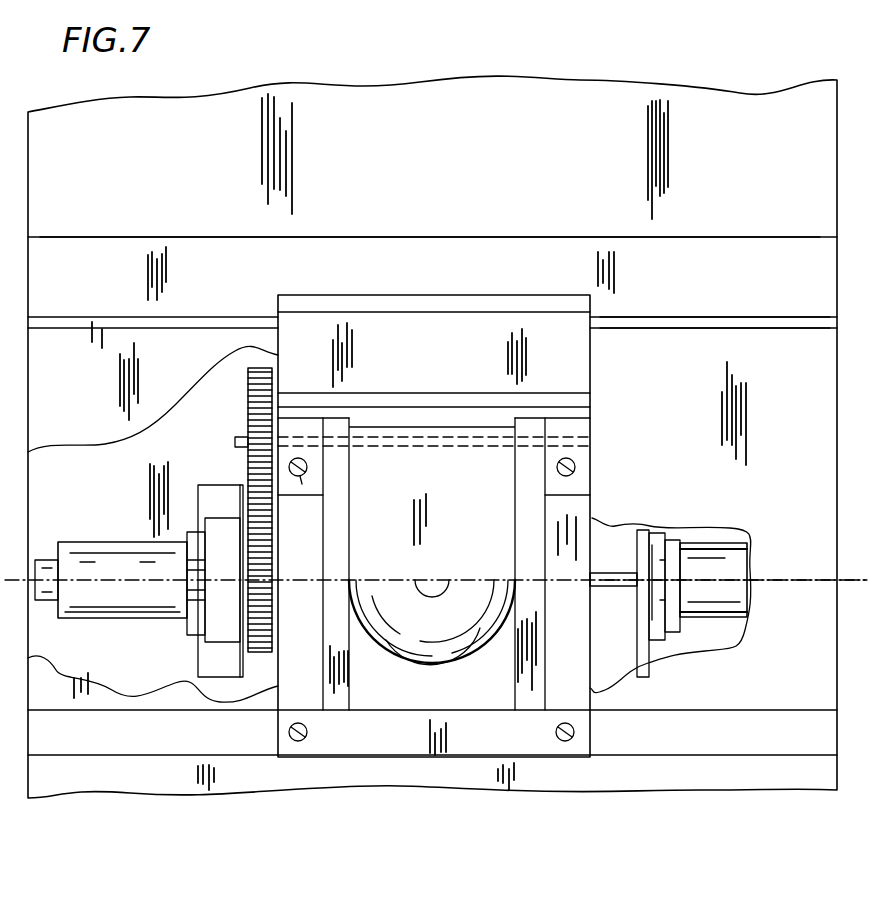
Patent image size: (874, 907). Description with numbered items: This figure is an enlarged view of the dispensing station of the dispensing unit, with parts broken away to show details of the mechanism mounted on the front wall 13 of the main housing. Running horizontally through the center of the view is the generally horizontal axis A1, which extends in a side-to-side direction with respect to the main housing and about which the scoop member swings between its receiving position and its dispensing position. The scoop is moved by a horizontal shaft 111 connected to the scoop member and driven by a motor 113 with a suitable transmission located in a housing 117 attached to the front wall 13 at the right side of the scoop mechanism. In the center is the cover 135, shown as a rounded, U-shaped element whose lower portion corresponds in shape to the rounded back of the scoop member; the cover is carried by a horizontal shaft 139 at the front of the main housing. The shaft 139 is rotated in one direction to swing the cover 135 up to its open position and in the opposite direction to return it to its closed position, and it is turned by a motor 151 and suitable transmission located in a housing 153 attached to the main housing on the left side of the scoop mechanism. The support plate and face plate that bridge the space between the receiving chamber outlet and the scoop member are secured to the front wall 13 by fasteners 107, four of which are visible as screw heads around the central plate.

The front wall 13 is at (750, 115).
The housing 153 is at (65, 278).
The housing 117 is at (785, 382).
The cover 135 is at (412, 667).
The fasteners 107 is at (575, 462).
The horizontal shaft 139 is at (236, 440).
The motor 151 is at (107, 542).
The horizontal shaft 111 is at (612, 572).
The motor 113 is at (700, 565).
The horizontal axis A1 is at (800, 582).